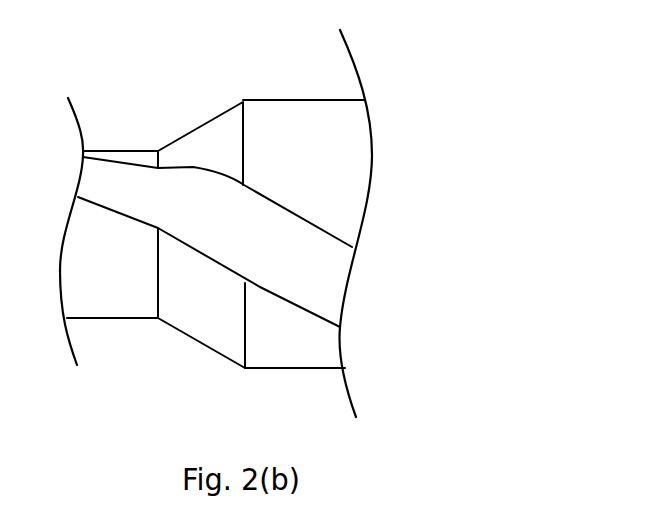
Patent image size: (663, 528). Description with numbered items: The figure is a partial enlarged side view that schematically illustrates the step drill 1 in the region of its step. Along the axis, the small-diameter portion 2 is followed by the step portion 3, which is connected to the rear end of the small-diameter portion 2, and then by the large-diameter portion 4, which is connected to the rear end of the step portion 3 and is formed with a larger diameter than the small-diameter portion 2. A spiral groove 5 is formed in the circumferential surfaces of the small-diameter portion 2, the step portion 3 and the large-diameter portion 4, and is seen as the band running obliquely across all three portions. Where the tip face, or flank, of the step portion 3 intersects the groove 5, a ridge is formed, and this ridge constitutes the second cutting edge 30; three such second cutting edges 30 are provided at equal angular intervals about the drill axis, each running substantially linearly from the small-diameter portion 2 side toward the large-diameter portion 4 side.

The step drill 1 is at (480, 67).
The small-diameter portion 2 is at (112, 305).
The step portion 3 is at (210, 330).
The large-diameter portion 4 is at (300, 355).
The spiral groove 5 is at (328, 278).
The second cutting edge 30 is at (252, 270).